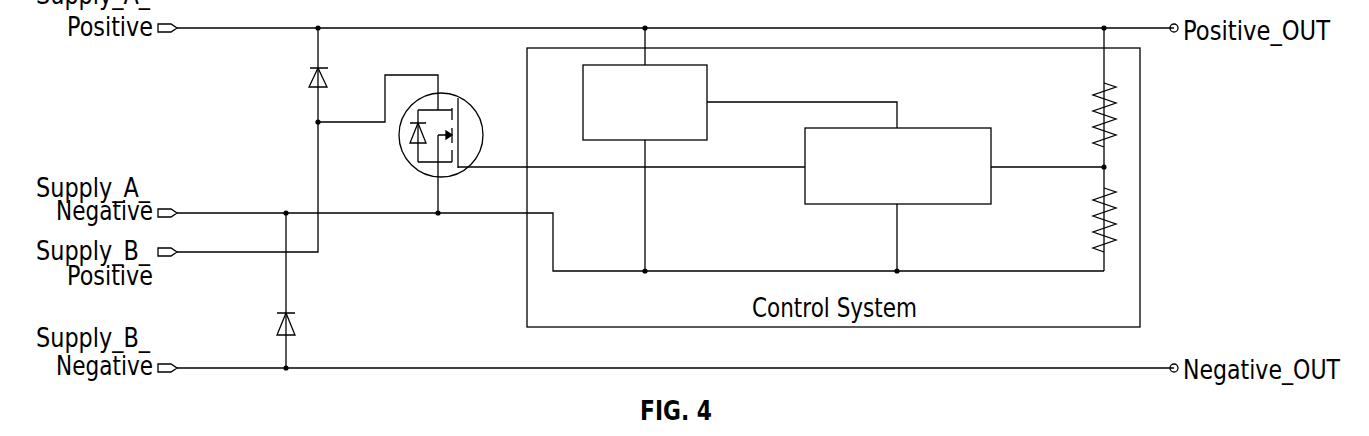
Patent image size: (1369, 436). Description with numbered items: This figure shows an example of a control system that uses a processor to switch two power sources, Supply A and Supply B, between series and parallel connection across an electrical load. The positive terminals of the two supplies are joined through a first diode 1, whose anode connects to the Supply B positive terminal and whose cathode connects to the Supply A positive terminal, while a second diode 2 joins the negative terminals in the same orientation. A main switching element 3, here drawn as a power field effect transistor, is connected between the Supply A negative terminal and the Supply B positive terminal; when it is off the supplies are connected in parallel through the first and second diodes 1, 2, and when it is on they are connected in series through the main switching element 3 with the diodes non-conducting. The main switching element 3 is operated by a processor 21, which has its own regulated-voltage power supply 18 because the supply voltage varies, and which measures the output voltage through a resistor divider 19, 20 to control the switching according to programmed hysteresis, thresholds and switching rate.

The first diode 1 is at (313, 76).
The second diode 2 is at (281, 322).
The main switching element 3 is at (402, 135).
The regulated-voltage power supply 18 is at (707, 88).
The resistor divider 19 is at (1095, 103).
The resistor divider 20 is at (1095, 207).
The processor 21 is at (991, 148).